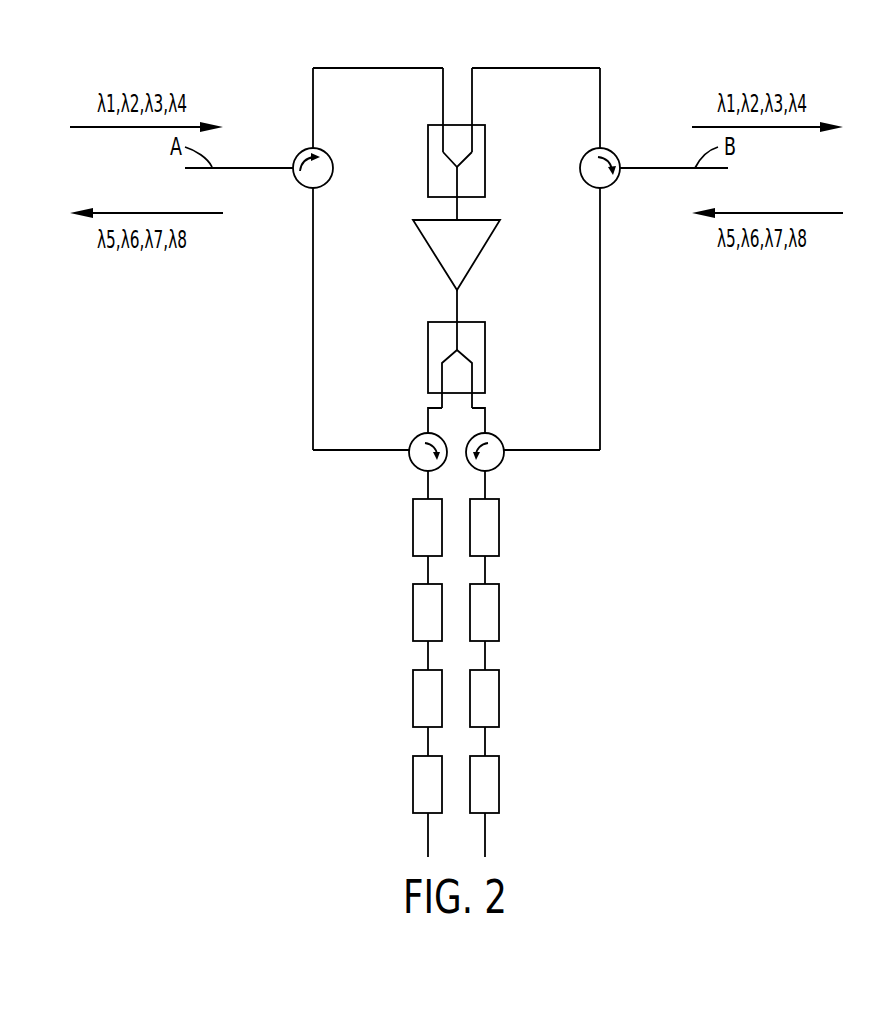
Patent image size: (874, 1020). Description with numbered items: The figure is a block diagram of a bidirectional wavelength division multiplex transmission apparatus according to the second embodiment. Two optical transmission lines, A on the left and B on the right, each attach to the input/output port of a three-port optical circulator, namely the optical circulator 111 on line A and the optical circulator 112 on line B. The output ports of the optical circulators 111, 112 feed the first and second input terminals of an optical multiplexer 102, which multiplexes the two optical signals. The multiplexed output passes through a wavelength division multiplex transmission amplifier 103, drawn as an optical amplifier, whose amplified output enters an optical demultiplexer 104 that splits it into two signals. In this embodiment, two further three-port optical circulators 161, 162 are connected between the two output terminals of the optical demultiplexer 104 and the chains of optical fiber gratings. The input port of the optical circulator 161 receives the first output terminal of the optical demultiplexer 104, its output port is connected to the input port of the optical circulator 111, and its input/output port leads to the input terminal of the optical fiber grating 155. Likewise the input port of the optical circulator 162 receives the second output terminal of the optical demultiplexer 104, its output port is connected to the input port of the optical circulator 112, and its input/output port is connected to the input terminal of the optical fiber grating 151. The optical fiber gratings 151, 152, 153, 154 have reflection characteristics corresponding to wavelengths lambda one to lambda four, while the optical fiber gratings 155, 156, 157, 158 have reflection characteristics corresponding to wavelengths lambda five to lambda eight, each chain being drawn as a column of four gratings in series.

The optical multiplexer 102 is at (485, 147).
The wavelength division multiplex transmission amplifier 103 is at (480, 258).
The optical demultiplexer 104 is at (428, 346).
The optical circulator 111 is at (330, 153).
The optical circulator 112 is at (617, 152).
The optical circulator 161 is at (410, 440).
The optical circulator 162 is at (490, 430).
The optical fiber grating 151 is at (499, 523).
The optical fiber grating 152 is at (499, 608).
The optical fiber grating 153 is at (499, 695).
The optical fiber grating 154 is at (499, 780).
The optical fiber grating 155 is at (413, 532).
The optical fiber grating 156 is at (413, 617).
The optical fiber grating 157 is at (413, 703).
The optical fiber grating 158 is at (413, 788).